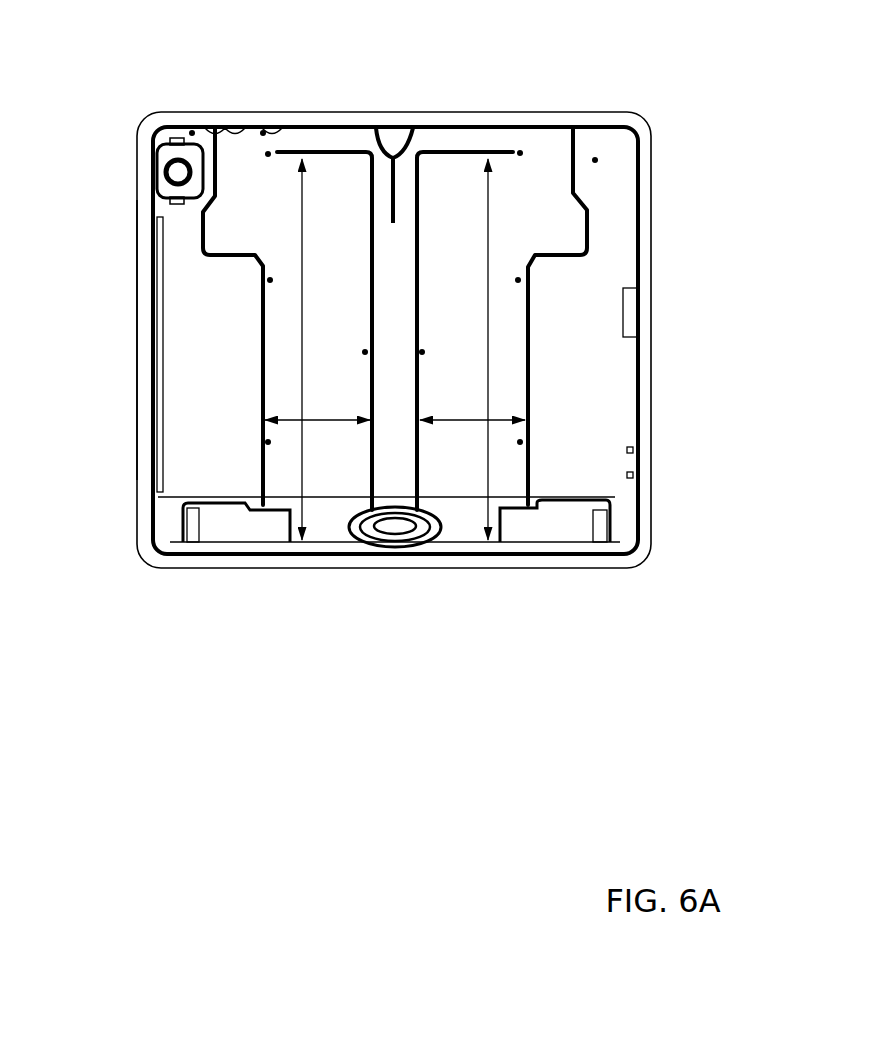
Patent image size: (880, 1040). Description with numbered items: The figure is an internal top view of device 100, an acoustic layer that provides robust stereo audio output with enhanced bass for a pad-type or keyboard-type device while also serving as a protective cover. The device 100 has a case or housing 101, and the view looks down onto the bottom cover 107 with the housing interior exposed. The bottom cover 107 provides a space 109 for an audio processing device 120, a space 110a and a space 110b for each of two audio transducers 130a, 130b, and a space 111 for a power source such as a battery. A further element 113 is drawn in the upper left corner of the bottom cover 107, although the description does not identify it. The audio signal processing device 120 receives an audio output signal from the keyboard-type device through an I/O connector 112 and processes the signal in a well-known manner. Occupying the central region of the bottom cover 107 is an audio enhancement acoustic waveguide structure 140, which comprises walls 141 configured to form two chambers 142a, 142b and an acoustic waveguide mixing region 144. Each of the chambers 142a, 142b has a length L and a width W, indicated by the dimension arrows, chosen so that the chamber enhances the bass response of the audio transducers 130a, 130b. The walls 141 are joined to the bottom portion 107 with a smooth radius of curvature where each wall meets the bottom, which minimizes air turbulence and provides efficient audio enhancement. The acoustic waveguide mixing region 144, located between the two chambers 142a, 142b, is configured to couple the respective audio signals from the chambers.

The device 100 is at (137, 76).
The housing 101 is at (597, 113).
The bottom cover 107 is at (140, 420).
The space for audio processing device 109 is at (600, 277).
The space for audio transducer 110a is at (208, 538).
The space for audio transducer 110b is at (590, 523).
The space for power source 111 is at (183, 362).
The I/O connector 112 is at (636, 310).
The camera 113 is at (160, 178).
The audio signal processing device 120 is at (608, 353).
The audio transducer 130a is at (252, 532).
The audio transducer 130b is at (540, 532).
The acoustic waveguide structure 140 is at (352, 180).
The walls 141 is at (208, 200).
The chamber 142a is at (317, 349).
The chamber 142b is at (472, 349).
The acoustic waveguide mixing region 144 is at (394, 209).